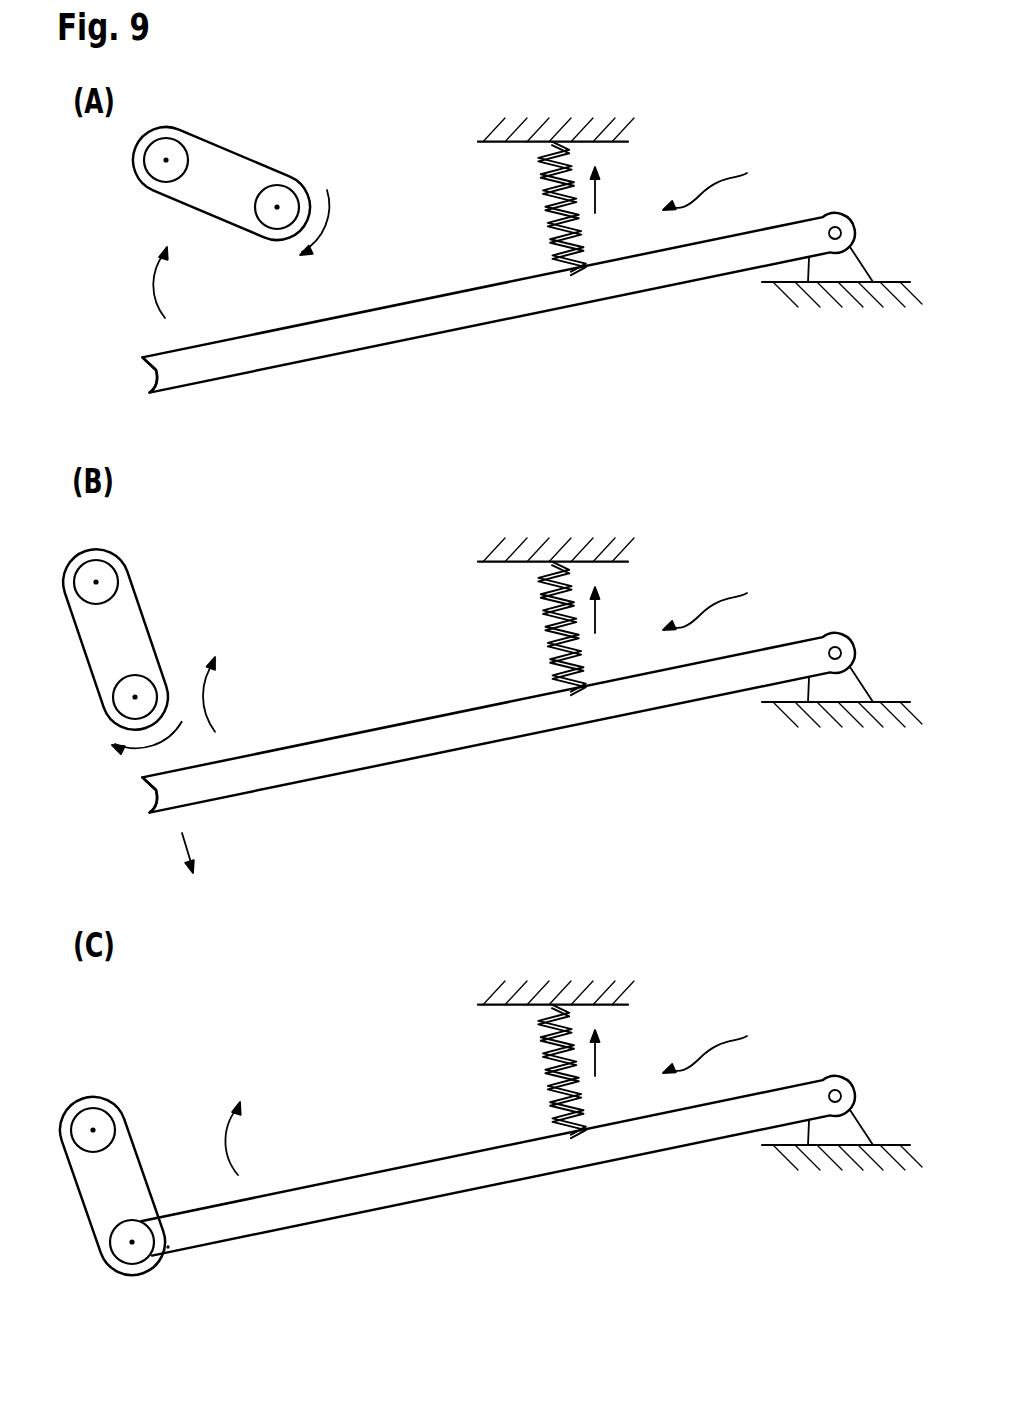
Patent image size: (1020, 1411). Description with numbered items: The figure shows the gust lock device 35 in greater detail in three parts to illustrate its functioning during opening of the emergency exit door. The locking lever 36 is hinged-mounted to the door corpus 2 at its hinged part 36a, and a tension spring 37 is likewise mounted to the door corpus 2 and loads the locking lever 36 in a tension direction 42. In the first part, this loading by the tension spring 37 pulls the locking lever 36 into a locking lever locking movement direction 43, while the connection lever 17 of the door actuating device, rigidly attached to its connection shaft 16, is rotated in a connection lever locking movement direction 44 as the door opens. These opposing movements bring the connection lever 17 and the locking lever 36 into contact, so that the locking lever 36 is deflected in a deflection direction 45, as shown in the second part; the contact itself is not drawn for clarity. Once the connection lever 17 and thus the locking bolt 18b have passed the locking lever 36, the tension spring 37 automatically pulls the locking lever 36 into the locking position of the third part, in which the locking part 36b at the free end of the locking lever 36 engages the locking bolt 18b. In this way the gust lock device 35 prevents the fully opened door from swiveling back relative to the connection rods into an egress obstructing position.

The door corpus 2 is at (563, 132).
The connection shaft 16 is at (186, 150).
The connection lever 17 is at (233, 182).
The locking bolt 18b is at (281, 190).
The gust lock device 35 is at (721, 612).
The locking lever 36 is at (557, 297).
The hinged part 36a is at (857, 208).
The locking part 36b is at (135, 384).
The tension spring 37 is at (547, 210).
The tension direction 42 is at (598, 200).
The locking lever locking movement direction 43 is at (150, 290).
The connection lever locking movement direction 44 is at (323, 237).
The deflection direction 45 is at (188, 845).